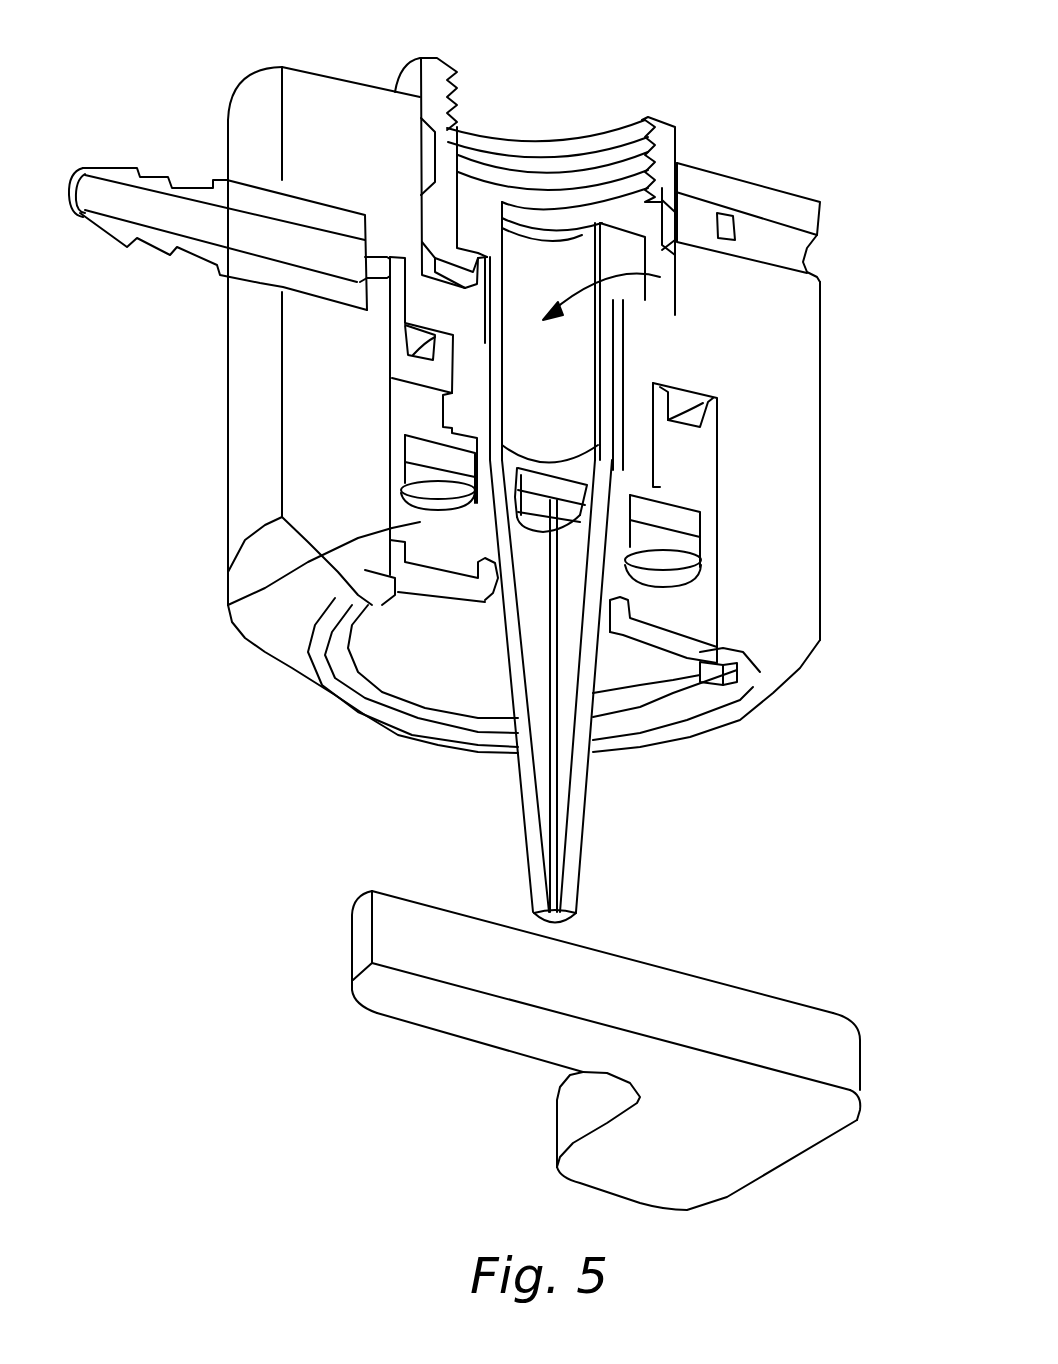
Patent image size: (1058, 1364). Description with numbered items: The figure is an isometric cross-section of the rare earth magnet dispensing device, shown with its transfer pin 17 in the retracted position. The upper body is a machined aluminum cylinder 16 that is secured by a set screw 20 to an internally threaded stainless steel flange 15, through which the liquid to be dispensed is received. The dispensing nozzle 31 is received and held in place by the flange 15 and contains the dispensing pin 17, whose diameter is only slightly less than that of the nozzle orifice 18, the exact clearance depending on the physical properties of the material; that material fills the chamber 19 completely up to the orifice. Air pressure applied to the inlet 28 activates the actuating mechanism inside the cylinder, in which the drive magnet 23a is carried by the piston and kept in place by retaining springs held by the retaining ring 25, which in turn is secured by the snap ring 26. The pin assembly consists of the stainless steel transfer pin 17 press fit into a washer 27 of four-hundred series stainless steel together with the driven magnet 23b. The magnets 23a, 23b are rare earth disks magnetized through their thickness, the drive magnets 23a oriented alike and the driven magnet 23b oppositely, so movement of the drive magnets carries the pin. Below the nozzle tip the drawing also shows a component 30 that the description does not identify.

The flange 15 is at (448, 70).
The cylinder 16 is at (315, 107).
The transfer pin 17 is at (540, 780).
The nozzle orifice 18 is at (533, 897).
The chamber 19 is at (660, 277).
The set screw 20 is at (698, 213).
The drive magnet 23a is at (680, 519).
The driven magnet 23b is at (533, 520).
The retaining ring 25 is at (443, 582).
The snap ring 26 is at (700, 767).
The washer 27 is at (543, 523).
The inlet 28 is at (229, 208).
The base bracket 30 is at (569, 1050).
The dispensing nozzle 31 is at (524, 816).